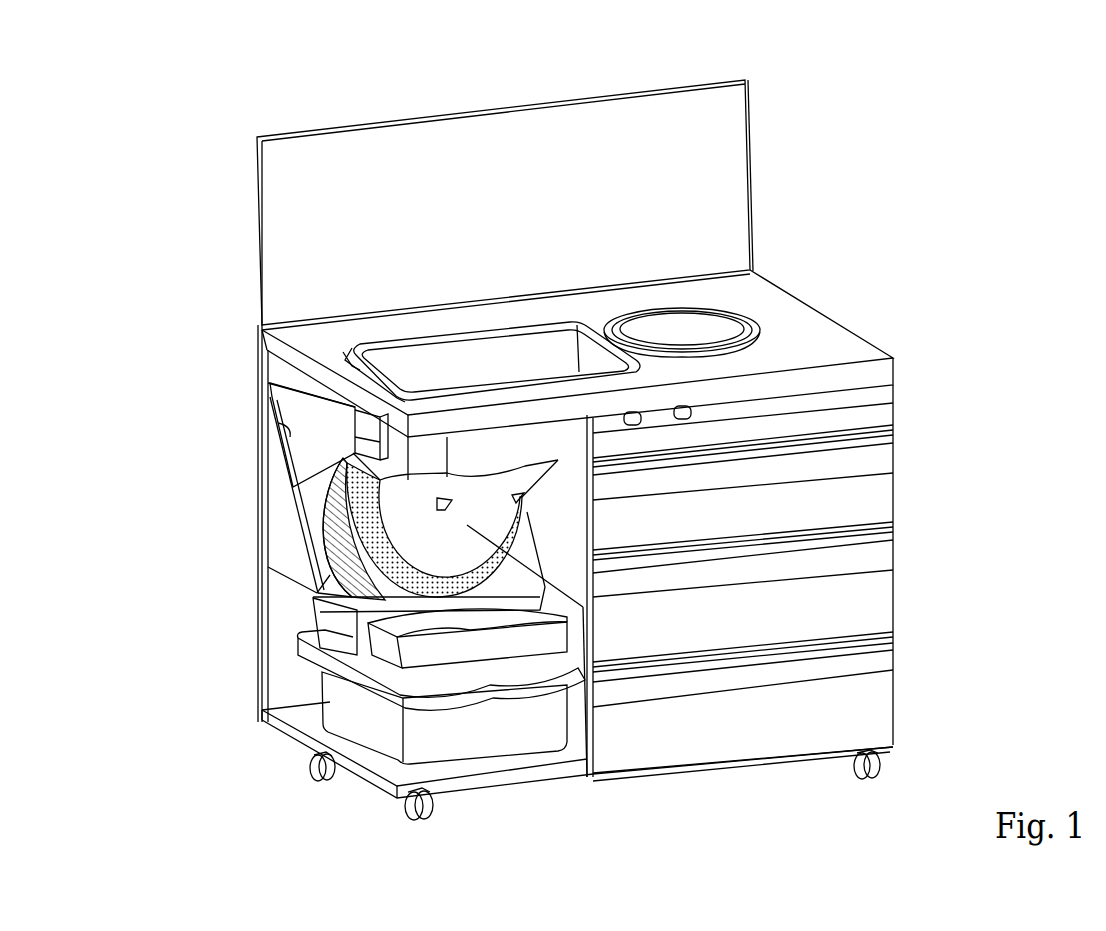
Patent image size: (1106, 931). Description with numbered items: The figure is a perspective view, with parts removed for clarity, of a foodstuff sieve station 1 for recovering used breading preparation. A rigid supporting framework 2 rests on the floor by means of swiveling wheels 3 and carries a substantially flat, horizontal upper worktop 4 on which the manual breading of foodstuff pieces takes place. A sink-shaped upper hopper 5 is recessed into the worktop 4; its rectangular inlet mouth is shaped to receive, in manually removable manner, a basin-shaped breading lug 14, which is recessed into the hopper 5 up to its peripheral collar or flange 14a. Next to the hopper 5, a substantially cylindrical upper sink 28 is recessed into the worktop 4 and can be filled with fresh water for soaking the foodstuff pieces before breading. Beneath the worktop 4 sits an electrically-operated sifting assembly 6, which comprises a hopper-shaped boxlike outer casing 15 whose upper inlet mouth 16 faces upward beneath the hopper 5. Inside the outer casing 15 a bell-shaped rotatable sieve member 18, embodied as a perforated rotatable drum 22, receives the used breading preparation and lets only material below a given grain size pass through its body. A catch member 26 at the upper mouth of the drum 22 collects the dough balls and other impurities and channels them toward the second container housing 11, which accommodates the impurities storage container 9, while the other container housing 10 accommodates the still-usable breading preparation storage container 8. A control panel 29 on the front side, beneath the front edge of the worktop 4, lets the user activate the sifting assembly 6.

The foodstuff sieve station 1 is at (916, 226).
The rigid supporting framework 2 is at (258, 516).
The swiveling wheels 3 is at (310, 770).
The upper worktop 4 is at (750, 292).
The upper hopper 5 is at (520, 552).
The electrically-operated sifting assembly 6 is at (325, 430).
The still-usable breading preparation storage container 8 is at (340, 707).
The dough balls and other impurities storage container 9 is at (490, 647).
The container housing 10 is at (425, 775).
The second container housing 11 is at (590, 772).
The breading lug 14 is at (407, 358).
The peripheral collar or flange 14a is at (343, 357).
The outer casing 15 is at (278, 423).
The upper inlet mouth 16 is at (522, 512).
The rotatable sieve member 18 is at (322, 555).
The rotatable drum 22 is at (322, 487).
The catch member 26 is at (357, 628).
The upper sink 28 is at (662, 322).
The control panel 29 is at (662, 428).